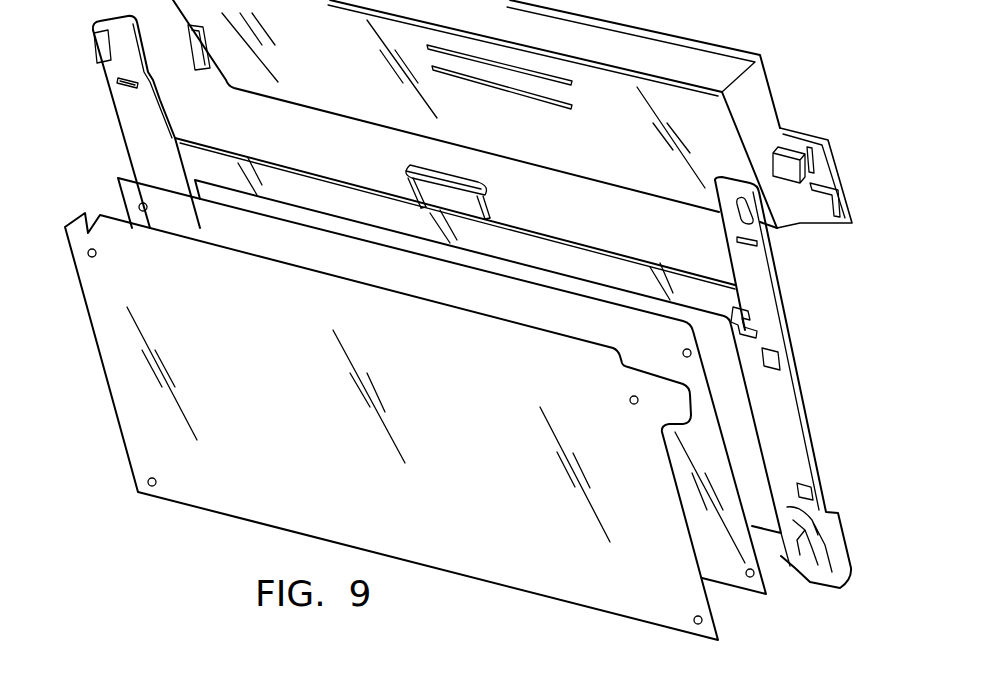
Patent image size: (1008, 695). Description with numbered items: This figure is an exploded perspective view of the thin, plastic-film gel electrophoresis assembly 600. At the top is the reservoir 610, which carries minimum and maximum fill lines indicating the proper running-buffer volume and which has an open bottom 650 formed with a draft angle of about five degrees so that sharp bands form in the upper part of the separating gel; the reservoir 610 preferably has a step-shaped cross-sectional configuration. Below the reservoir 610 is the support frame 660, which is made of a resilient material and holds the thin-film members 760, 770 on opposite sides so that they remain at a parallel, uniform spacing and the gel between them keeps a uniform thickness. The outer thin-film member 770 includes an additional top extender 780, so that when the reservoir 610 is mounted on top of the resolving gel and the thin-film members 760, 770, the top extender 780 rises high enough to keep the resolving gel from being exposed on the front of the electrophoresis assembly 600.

The thin, plastic-film gel electrophoresis assembly 600 is at (798, 302).
The reservoir 610 is at (765, 53).
The open bottom 650 is at (593, 180).
The support frame 660 is at (820, 410).
The thin-film member 760 is at (137, 182).
The outer thin-film member 770 is at (177, 505).
The top extender 780 is at (287, 263).